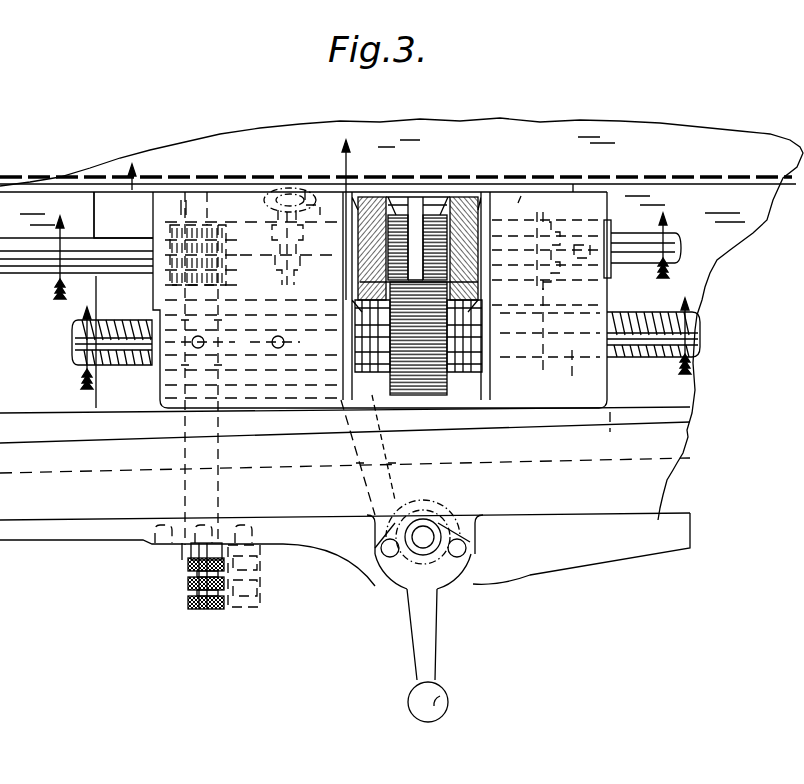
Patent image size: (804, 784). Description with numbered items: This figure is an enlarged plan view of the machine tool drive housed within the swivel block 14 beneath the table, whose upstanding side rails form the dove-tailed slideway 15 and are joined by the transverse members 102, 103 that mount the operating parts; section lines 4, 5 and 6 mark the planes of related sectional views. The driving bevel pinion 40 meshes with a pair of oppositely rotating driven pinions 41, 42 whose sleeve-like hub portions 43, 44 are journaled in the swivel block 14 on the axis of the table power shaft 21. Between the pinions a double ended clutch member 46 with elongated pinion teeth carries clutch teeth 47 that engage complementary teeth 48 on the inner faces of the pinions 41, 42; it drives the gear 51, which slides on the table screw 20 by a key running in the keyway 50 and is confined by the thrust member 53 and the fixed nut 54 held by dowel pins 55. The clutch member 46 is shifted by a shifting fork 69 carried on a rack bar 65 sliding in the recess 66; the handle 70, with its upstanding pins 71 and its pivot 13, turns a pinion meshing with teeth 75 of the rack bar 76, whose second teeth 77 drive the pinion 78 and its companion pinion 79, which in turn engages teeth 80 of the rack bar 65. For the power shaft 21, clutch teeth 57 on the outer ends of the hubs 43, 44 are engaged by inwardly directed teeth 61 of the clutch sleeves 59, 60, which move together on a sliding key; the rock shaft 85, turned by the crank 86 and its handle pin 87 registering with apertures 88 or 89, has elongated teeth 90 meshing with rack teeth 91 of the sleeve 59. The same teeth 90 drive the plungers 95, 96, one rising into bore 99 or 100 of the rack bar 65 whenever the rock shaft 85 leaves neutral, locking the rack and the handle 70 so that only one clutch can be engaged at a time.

The section line 4-4 / shaft 4 is at (334, 249).
The section line 5- 5 is at (386, 335).
The section line 6- 6 is at (238, 211).
The pivot pin 13 is at (431, 527).
The swivel block 14 is at (118, 505).
The dove-tailed slideway 15 is at (660, 412).
The table screw 20 is at (630, 318).
The table power shaft 21 is at (670, 242).
The bevel pinion 40 is at (388, 203).
The driven pinion 41 is at (378, 210).
The driven pinion 42 is at (458, 195).
The hub portion 43 is at (304, 257).
The hub portion 44 is at (303, 296).
The clutch member 46 is at (396, 208).
The clutch teeth 47 is at (452, 236).
The clutch teeth 48 is at (490, 259).
The keyway 50 is at (652, 342).
The gear 51 is at (447, 382).
The thrust member 53 is at (573, 388).
The fixed nut 54 is at (268, 380).
The dowel pins 55 is at (283, 338).
The clutch teeth 57 is at (557, 222).
The clutch sleeve 59 is at (272, 258).
The clutch sleeve 60 is at (584, 290).
The clutch teeth 61 is at (560, 226).
The rack bar 65 is at (518, 208).
The recess 66 is at (605, 185).
The shifting fork 69 is at (418, 217).
The handle 70 is at (438, 633).
The upstanding pins 71 is at (462, 537).
The teeth 75 is at (431, 498).
The rack bar 76 is at (385, 452).
The teeth 77 is at (307, 186).
The pinion 78 is at (264, 216).
The pinion 79 is at (272, 186).
The teeth 80 is at (278, 187).
The rock shaft 85 is at (190, 484).
The crank 86 is at (190, 553).
The handle portion 87 is at (190, 592).
The apertures 88 is at (155, 528).
The aperture 89 is at (225, 517).
The teeth 90 is at (176, 215).
The rack teeth 91 is at (222, 286).
The plunger 95 is at (172, 186).
The plunger 96 is at (218, 188).
The bore 99 is at (168, 182).
The bore 100 is at (203, 186).
The transverse member 102 is at (160, 303).
The transverse member 103 is at (614, 283).